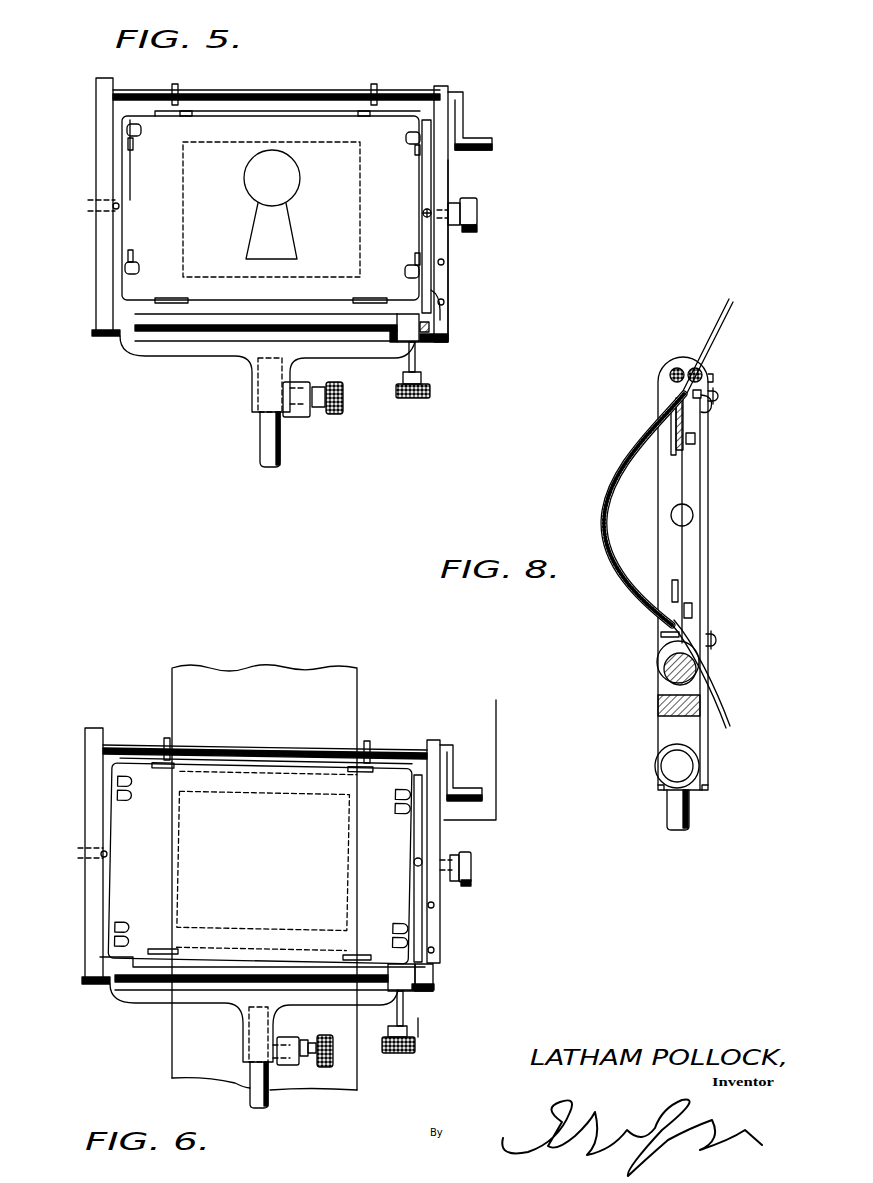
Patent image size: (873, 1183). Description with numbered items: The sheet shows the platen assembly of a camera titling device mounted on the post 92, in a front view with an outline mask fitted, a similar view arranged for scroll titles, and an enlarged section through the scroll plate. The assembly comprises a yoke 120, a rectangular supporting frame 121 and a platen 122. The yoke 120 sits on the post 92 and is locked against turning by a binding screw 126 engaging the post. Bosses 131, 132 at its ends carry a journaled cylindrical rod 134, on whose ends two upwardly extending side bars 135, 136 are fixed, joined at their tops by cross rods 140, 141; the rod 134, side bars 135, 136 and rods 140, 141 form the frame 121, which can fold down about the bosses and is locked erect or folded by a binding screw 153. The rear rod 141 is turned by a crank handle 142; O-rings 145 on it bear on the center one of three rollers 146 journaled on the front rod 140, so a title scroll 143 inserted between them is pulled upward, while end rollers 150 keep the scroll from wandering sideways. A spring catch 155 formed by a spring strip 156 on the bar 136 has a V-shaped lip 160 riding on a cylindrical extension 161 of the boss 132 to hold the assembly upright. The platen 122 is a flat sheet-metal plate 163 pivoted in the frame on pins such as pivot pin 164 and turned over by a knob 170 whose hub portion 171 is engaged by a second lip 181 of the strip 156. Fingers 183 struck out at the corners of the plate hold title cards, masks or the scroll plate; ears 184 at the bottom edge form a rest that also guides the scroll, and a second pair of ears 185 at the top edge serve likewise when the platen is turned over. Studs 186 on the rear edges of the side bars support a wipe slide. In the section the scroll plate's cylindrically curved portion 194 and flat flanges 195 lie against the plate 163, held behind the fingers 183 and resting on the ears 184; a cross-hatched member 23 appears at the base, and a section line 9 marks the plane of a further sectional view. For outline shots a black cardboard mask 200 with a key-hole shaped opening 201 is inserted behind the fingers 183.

In FIG. 6, the section line 9 is at (500, 706).
In FIG. 8, the spacer block 23 is at (705, 705).
In FIG. 5, the post 92 is at (263, 435).
In FIG. 8, the post 92 is at (672, 807).
In FIG. 5, the yoke 120 is at (213, 358).
In FIG. 8, the yoke 120 is at (658, 712).
In FIG. 6, the yoke 120 is at (230, 1012).
In FIG. 5, the rectangular supporting frame 121 is at (97, 249).
In FIG. 8, the rectangular supporting frame 121 is at (706, 568).
In FIG. 6, the rectangular supporting frame 121 is at (85, 916).
In FIG. 5, the platen 122 is at (138, 324).
In FIG. 8, the platen 122 is at (688, 463).
In FIG. 6, the platen 122 is at (145, 952).
In FIG. 5, the binding screw 126 is at (333, 417).
In FIG. 8, the binding screw 126 is at (682, 768).
In FIG. 5, the boss 131 is at (115, 315).
In FIG. 8, the boss 131 is at (660, 675).
In FIG. 5, the boss 132 is at (407, 337).
In FIG. 6, the boss 132 is at (400, 982).
In FIG. 5, the cylindrical rod 134 is at (373, 338).
In FIG. 8, the cylindrical rod 134 is at (687, 668).
In FIG. 6, the cylindrical rod 134 is at (262, 972).
In FIG. 5, the side bar 135 is at (96, 137).
In FIG. 8, the side bar 135 is at (698, 541).
In FIG. 6, the side bar 135 is at (93, 787).
In FIG. 5, the side bar 136 is at (442, 178).
In FIG. 6, the side bar 136 is at (432, 822).
In FIG. 5, the cross rod 140 is at (400, 96).
In FIG. 8, the cross rod 140 is at (676, 366).
In FIG. 6, the cross rod 140 is at (407, 752).
In FIG. 8, the cross rod 141 is at (700, 375).
In FIG. 5, the crank handle 142 is at (460, 128).
In FIG. 6, the crank handle 142 is at (453, 763).
In FIG. 8, the title scroll 143 is at (680, 398).
In FIG. 6, the title scroll 143 is at (222, 673).
In FIG. 8, the O-rings 145 is at (712, 378).
In FIG. 5, the rollers 146 is at (303, 98).
In FIG. 6, the rollers 146 is at (290, 749).
In FIG. 6, the end rollers 150 is at (165, 740).
In FIG. 5, the binding screw 153 is at (430, 395).
In FIG. 5, the spring catch 155 is at (447, 300).
In FIG. 6, the spring catch 155 is at (420, 910).
In FIG. 5, the spring strip 156 is at (455, 283).
In FIG. 6, the spring strip 156 is at (428, 928).
In FIG. 6, the V-shaped lip 160 is at (420, 980).
In FIG. 6, the cylindrical extension 161 is at (427, 990).
In FIG. 8, the plate 163 is at (683, 488).
In FIG. 8, the pivot pin 164 is at (690, 517).
In FIG. 5, the knob 170 is at (478, 212).
In FIG. 6, the knob 170 is at (462, 882).
In FIG. 6, the hub portion 171 is at (447, 848).
In FIG. 6, the V-shaped lip 181 is at (470, 862).
In FIG. 5, the fingers 183 is at (135, 135).
In FIG. 8, the fingers 183 is at (673, 417).
In FIG. 5, the ears 184 is at (177, 297).
In FIG. 8, the ears 184 is at (668, 640).
In FIG. 6, the ears 184 is at (177, 948).
In FIG. 8, the ears 185 is at (713, 410).
In FIG. 8, the studs 186 is at (718, 396).
In FIG. 8, the cylindrically curved portion 194 is at (606, 528).
In FIG. 8, the flanges 195 is at (675, 395).
In FIG. 5, the mask 200 is at (347, 196).
In FIG. 5, the key-hole shaped opening 201 is at (256, 190).